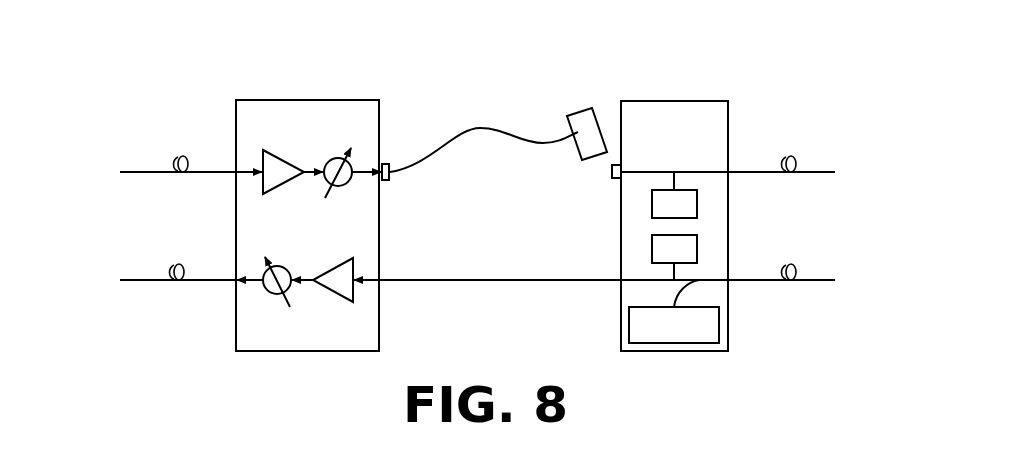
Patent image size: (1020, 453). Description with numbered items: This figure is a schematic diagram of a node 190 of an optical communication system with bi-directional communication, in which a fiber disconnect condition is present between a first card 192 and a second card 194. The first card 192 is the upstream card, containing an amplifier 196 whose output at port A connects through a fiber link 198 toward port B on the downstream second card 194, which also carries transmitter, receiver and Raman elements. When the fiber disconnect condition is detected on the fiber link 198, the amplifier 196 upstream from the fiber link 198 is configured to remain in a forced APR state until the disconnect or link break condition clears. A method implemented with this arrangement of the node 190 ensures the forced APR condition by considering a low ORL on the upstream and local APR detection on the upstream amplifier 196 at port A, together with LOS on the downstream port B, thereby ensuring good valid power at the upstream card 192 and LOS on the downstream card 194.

The node 190 is at (153, 85).
The first card 192 is at (317, 352).
The second card 194 is at (683, 352).
The amplifier 196 is at (275, 152).
The fiber link 198 is at (480, 128).